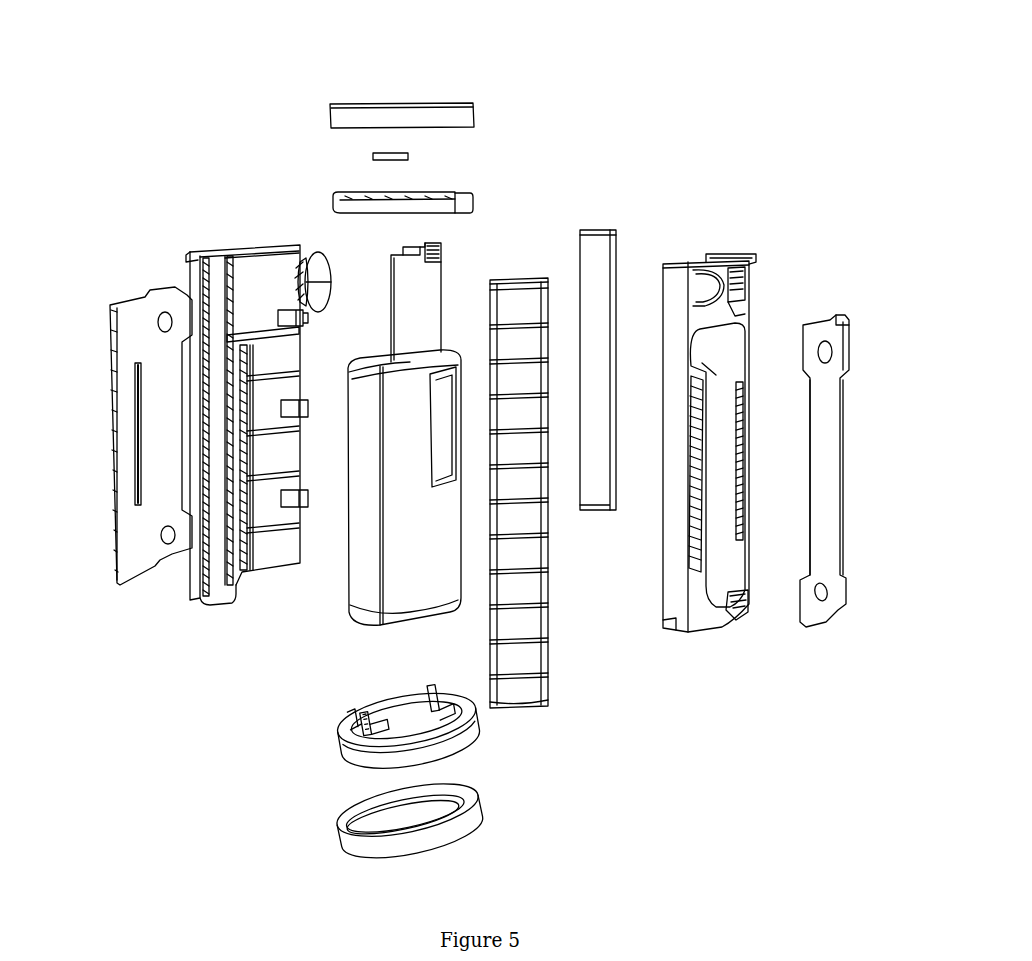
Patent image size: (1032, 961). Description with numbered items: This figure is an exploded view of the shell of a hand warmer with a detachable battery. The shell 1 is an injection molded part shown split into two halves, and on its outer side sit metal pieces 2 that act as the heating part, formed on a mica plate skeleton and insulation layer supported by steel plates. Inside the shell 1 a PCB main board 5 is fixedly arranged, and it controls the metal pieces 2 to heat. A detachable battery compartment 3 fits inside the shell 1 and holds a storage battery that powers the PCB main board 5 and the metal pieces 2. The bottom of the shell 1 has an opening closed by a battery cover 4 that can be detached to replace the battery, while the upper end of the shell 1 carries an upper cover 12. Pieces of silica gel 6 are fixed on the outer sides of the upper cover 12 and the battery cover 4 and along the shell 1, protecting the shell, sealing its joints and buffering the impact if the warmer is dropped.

The shell 1 is at (194, 282).
The metal piece 2 is at (114, 446).
The battery compartment 3 is at (368, 547).
The battery cover 4 is at (445, 745).
The PCB main board 5 is at (430, 292).
The silica gel 6 is at (411, 115).
The upper cover 12 is at (356, 207).